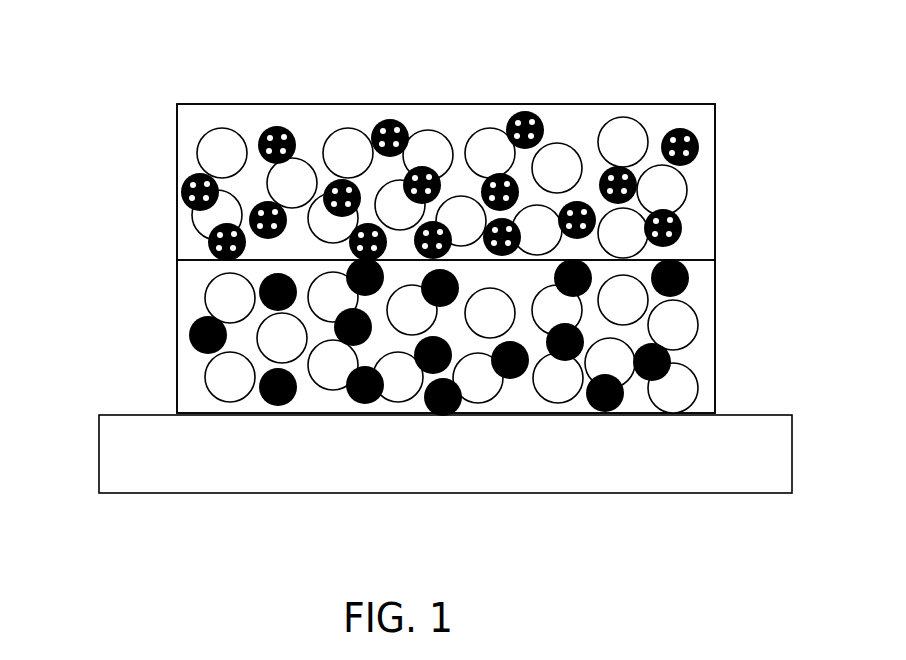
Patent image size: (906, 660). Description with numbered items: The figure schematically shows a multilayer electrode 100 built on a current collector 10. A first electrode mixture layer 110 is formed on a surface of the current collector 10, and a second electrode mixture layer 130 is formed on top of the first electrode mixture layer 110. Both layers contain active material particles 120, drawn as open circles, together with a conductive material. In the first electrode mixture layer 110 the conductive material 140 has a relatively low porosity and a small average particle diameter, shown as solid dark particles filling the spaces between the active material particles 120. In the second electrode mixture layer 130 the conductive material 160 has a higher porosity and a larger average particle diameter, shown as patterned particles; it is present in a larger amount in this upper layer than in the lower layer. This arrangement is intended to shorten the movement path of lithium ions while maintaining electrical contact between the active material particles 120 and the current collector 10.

The current collector 10 is at (99, 455).
The multilayer electrode 100 is at (675, 80).
The first electrode mixture layer 110 is at (177, 358).
The active material particles 120 is at (205, 297).
The second electrode mixture layer 130 is at (177, 163).
The first conductive material 140 is at (689, 278).
The second conductive material 160 is at (699, 143).